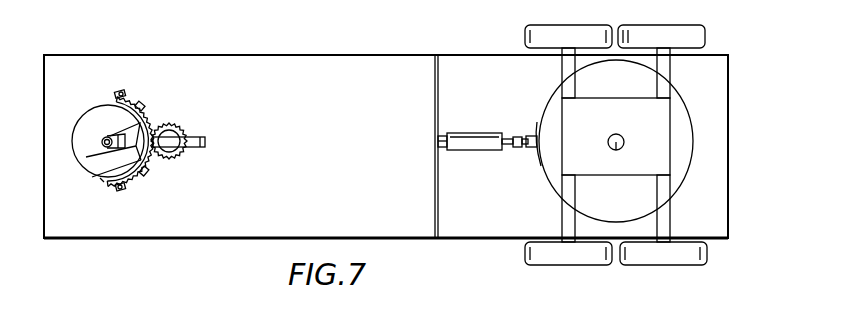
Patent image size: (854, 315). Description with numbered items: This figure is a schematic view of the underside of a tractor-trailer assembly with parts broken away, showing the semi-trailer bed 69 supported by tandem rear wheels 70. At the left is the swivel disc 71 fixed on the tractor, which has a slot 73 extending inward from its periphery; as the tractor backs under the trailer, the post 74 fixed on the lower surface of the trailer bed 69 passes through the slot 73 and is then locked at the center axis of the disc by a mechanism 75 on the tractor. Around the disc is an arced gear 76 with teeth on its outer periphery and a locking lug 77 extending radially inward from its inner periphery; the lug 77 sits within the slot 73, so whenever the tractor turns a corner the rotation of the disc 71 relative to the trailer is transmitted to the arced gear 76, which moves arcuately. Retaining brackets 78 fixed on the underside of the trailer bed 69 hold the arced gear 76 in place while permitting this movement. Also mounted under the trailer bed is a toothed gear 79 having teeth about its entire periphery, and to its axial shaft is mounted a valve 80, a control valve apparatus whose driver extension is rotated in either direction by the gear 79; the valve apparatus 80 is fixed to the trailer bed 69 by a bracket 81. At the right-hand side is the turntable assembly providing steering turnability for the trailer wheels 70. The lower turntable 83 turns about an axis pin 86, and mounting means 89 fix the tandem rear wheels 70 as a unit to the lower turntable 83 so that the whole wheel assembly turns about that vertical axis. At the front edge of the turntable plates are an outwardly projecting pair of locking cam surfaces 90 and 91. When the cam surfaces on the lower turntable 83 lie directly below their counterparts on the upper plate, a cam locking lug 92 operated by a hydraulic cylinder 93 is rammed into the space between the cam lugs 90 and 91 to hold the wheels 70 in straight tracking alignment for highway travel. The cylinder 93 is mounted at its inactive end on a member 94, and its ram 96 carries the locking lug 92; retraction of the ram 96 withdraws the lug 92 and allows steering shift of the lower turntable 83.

The semi-trailer bed 69 is at (311, 166).
The rear wheels 70 is at (587, 32).
The swivel disc 71 is at (88, 124).
The slot 73 is at (108, 181).
The post 74 is at (100, 144).
The locking mechanism 75 is at (90, 176).
The arced gear 76 is at (140, 177).
The locking lug 77 is at (142, 108).
The retaining brackets 78 is at (126, 91).
The toothed gear 79 is at (178, 124).
The valve 80 is at (170, 154).
The bracket 81 is at (206, 147).
The lower turntable 83 is at (668, 194).
The axis pin 86 is at (613, 149).
The mounting means 89 is at (655, 129).
The locking cam surface 90 is at (533, 136).
The locking cam surface 91 is at (539, 155).
The cam locking lug 92 is at (540, 133).
The hydraulic cylinder 93 is at (477, 140).
The mounting member 94 is at (435, 170).
The ram 96 is at (519, 150).